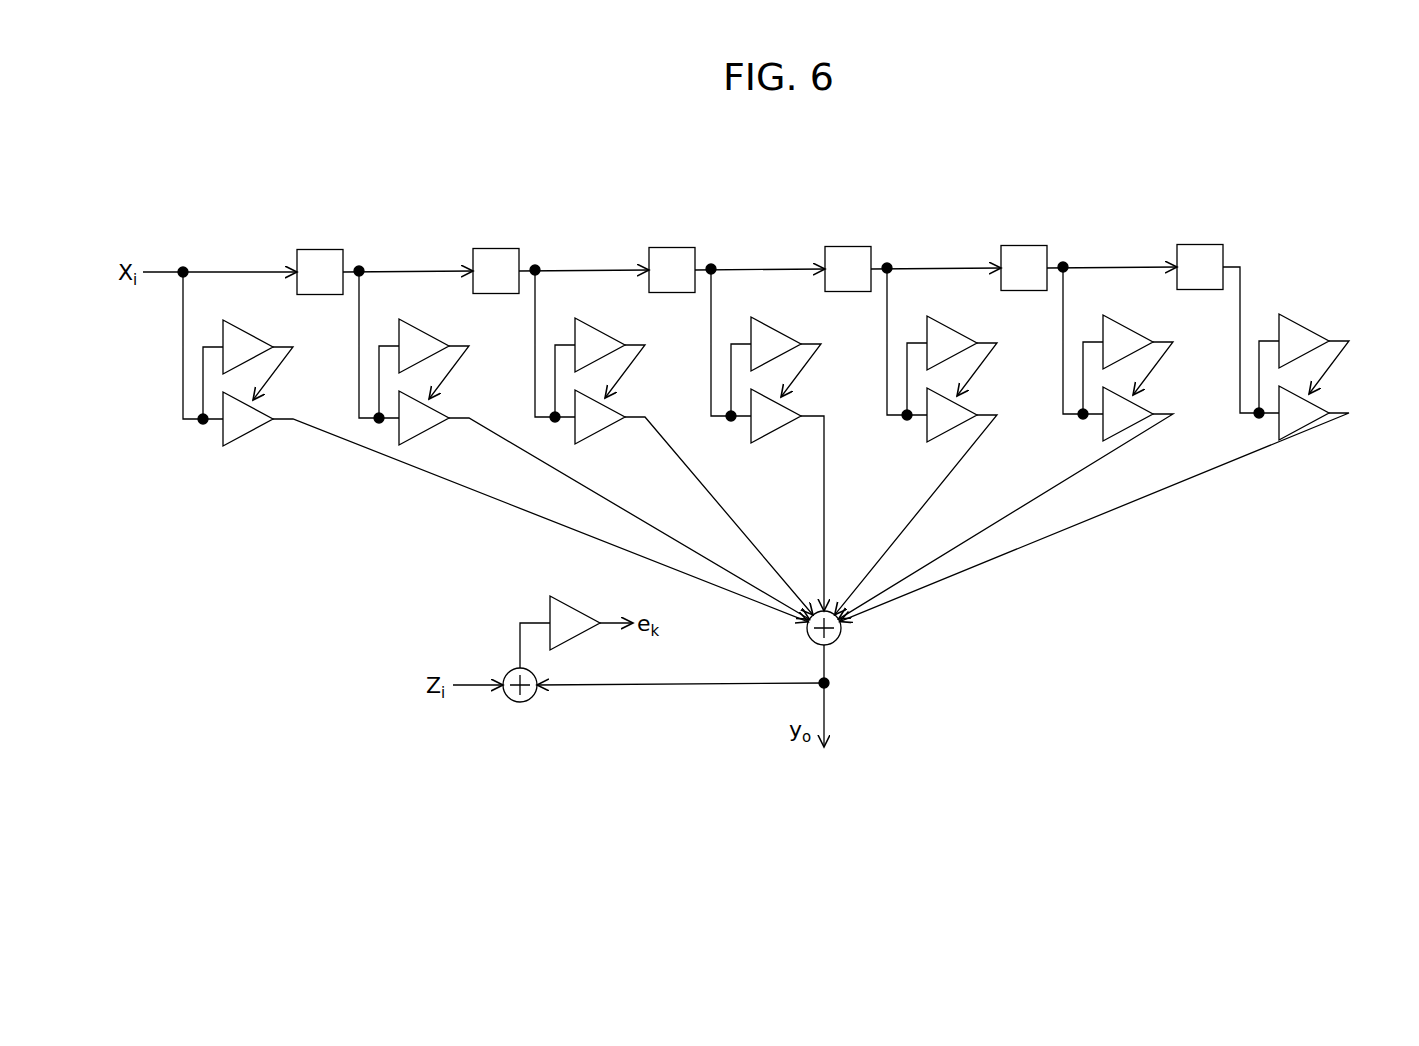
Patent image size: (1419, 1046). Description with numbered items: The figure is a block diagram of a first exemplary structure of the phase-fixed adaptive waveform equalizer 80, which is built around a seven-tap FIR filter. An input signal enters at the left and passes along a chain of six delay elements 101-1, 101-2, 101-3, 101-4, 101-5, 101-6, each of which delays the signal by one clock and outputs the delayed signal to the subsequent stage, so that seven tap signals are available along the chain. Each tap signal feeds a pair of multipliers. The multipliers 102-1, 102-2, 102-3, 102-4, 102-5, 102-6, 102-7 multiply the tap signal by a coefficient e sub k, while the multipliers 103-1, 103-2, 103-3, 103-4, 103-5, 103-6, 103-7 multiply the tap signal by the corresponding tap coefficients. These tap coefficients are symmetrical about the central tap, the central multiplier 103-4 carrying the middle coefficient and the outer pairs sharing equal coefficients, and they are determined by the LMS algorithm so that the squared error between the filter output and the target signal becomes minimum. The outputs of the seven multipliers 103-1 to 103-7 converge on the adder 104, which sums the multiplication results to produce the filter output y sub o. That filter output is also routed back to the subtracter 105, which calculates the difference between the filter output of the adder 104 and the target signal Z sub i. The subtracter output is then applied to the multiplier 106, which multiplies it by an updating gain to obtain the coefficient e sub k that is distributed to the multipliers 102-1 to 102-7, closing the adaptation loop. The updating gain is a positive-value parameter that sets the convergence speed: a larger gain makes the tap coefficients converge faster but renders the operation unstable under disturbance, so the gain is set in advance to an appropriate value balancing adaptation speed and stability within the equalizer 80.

The delay element 101-1 is at (320, 249).
The delay element 101-2 is at (496, 248).
The delay element 101-3 is at (672, 247).
The delay element 101-4 is at (848, 246).
The delay element 101-5 is at (1024, 245).
The delay element 101-6 is at (1200, 244).
The multiplier 102-1 is at (248, 334).
The multiplier 102-2 is at (424, 333).
The multiplier 102-3 is at (600, 332).
The multiplier 102-4 is at (776, 331).
The multiplier 102-5 is at (952, 330).
The multiplier 102-6 is at (1128, 329).
The multiplier 102-7 is at (1302, 323).
The multiplier 103-1 is at (243, 442).
The multiplier 103-2 is at (425, 432).
The multiplier 103-3 is at (606, 432).
The multiplier 103-4 is at (772, 440).
The multiplier 103-5 is at (925, 428).
The multiplier 103-6 is at (1100, 430).
The multiplier 103-7 is at (1315, 408).
The adder 104 is at (836, 640).
The subtracter 105 is at (520, 702).
The multiplier 106 is at (548, 610).
The phase-fixed adaptive waveform equalizer 80 is at (981, 760).